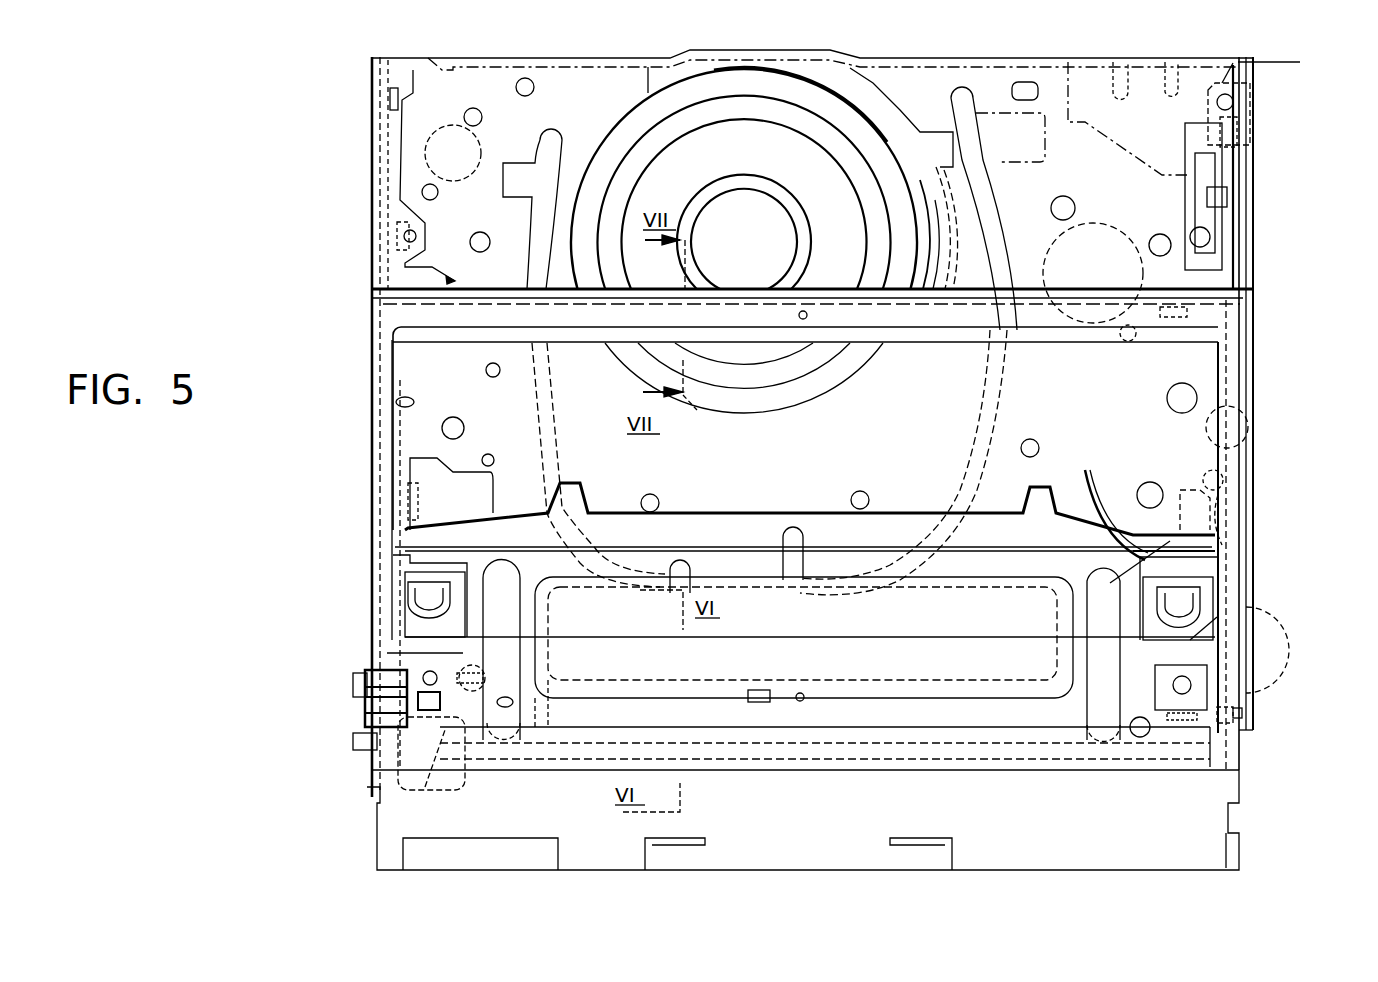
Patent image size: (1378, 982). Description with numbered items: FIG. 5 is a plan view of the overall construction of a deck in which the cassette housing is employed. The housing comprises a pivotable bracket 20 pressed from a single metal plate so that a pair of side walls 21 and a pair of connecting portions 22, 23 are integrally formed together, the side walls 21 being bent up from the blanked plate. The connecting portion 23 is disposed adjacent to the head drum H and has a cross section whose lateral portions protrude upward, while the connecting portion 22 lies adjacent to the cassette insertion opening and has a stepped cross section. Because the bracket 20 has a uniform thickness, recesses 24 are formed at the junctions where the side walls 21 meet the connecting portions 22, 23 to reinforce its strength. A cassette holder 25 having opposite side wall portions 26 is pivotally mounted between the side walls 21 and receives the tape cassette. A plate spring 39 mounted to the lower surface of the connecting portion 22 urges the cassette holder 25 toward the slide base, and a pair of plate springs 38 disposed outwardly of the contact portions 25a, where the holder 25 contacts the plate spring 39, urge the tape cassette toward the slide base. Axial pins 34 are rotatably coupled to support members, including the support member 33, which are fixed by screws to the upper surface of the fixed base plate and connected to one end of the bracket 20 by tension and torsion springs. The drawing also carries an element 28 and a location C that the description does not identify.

The pivotable bracket 20 is at (372, 263).
The side walls 21 is at (393, 565).
The connecting portion 22 is at (1028, 668).
The connecting portion 23 is at (1040, 325).
The recesses 24 is at (368, 655).
The cassette holder 25 is at (393, 400).
The contact portions 25a is at (512, 585).
The side wall portions 26 is at (1217, 497).
The lever bar 28 is at (760, 512).
The support member 33 is at (1300, 62).
The axial pins 34 is at (1250, 108).
The plate springs 38 is at (423, 600).
The plate spring 39 is at (1234, 102).
The circle region C is at (1263, 668).
The head drum H is at (836, 112).